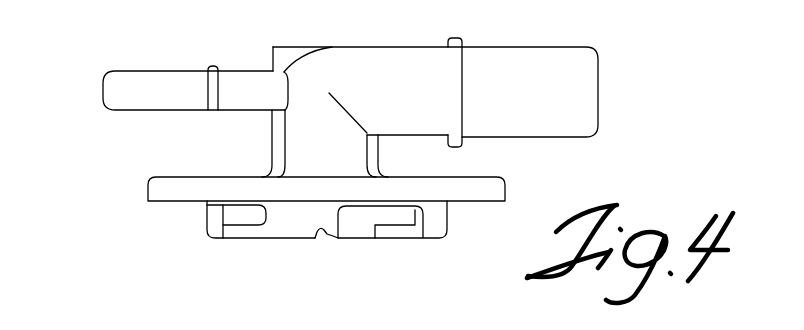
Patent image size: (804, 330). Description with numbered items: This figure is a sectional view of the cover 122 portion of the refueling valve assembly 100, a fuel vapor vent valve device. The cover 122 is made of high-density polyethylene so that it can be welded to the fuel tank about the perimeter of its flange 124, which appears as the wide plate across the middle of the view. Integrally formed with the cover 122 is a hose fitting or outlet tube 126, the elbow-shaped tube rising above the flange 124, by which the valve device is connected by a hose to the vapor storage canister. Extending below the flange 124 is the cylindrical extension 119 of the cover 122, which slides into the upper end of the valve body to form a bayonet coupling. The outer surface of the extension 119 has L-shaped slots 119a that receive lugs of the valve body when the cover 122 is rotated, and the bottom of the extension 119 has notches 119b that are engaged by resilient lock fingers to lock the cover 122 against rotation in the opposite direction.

The refueling valve assembly 100 is at (515, 43).
The outlet tube 126 is at (337, 48).
The flange 124 is at (183, 182).
The cover 122 is at (148, 181).
The cylindrical extension 119 is at (293, 226).
The L-shaped slots 119a is at (398, 214).
The notches 119b is at (328, 240).